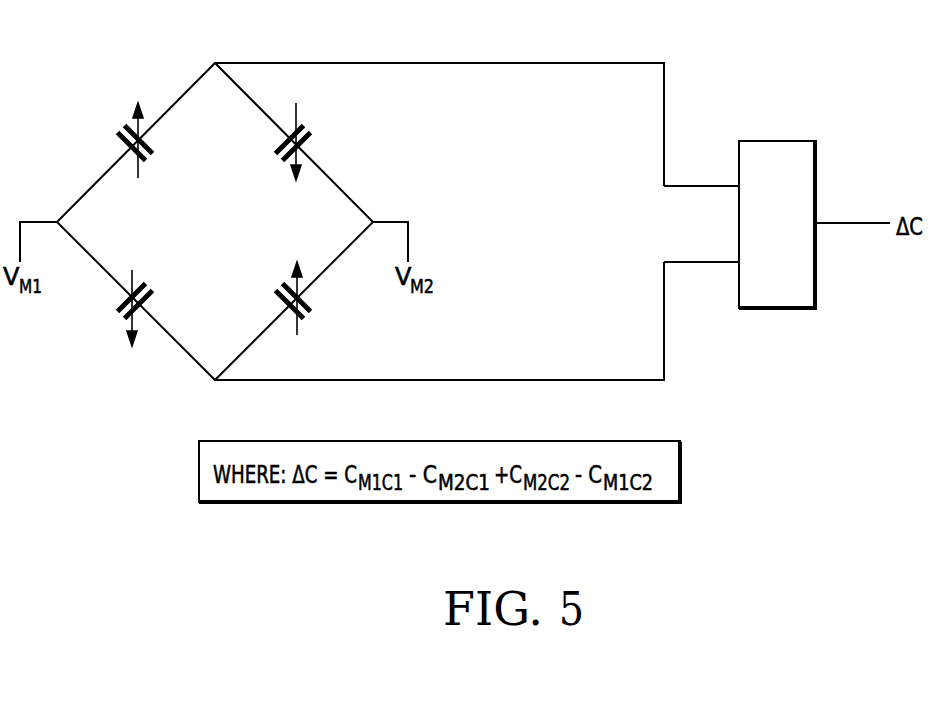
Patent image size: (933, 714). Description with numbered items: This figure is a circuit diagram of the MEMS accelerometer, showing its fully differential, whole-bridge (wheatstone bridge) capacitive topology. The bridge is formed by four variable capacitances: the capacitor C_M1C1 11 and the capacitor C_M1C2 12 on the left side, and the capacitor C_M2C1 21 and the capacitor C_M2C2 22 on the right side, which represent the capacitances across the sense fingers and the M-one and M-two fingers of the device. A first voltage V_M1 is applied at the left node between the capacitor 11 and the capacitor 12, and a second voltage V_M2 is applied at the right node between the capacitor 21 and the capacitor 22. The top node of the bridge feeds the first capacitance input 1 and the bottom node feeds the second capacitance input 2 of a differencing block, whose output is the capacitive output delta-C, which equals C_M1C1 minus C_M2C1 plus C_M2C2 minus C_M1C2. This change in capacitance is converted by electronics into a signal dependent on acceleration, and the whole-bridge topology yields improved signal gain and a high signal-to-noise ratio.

The first capacitance input C1 of differential capacitance block 1 is at (720, 192).
The second capacitance input C2 of differential capacitance block 2 is at (720, 265).
The variable capacitor C_M1C1 11 is at (101, 135).
The variable capacitor C_M2C1 21 is at (330, 141).
The variable capacitor C_M1C2 12 is at (101, 311).
The variable capacitor C_M2C2 22 is at (327, 307).